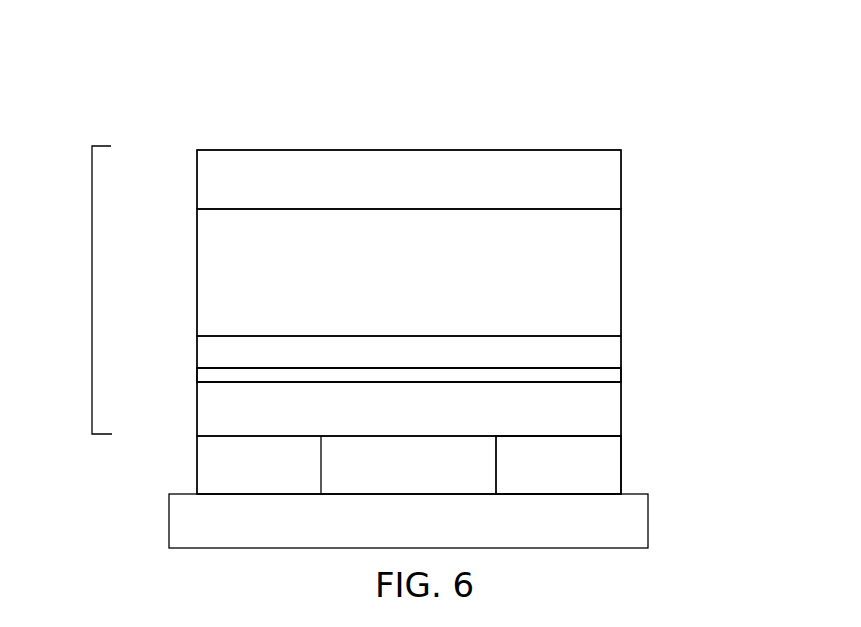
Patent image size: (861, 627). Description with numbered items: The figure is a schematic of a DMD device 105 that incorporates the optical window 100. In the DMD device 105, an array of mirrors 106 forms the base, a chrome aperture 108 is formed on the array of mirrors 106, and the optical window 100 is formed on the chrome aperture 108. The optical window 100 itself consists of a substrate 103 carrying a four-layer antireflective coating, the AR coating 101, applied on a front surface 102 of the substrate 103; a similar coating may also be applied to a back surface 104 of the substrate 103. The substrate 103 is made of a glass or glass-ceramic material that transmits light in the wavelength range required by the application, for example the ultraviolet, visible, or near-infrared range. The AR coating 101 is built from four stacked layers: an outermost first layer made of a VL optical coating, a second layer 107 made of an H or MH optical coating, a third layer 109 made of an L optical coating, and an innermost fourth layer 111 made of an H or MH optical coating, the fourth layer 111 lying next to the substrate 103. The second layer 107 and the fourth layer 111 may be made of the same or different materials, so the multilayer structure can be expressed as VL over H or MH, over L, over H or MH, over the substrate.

The optical window 100 is at (92, 280).
The 4 L-structure AR coating 101 is at (621, 258).
The front surface 102 is at (591, 381).
The substrate 103 is at (621, 410).
The back surface 104 is at (594, 437).
The DMD device 105 is at (382, 131).
The array of mirrors 106 is at (648, 518).
The second layer 107 is at (197, 267).
The chrome aperture 108 is at (197, 462).
The third layer 109 is at (197, 348).
The fourth layer 111 is at (197, 373).